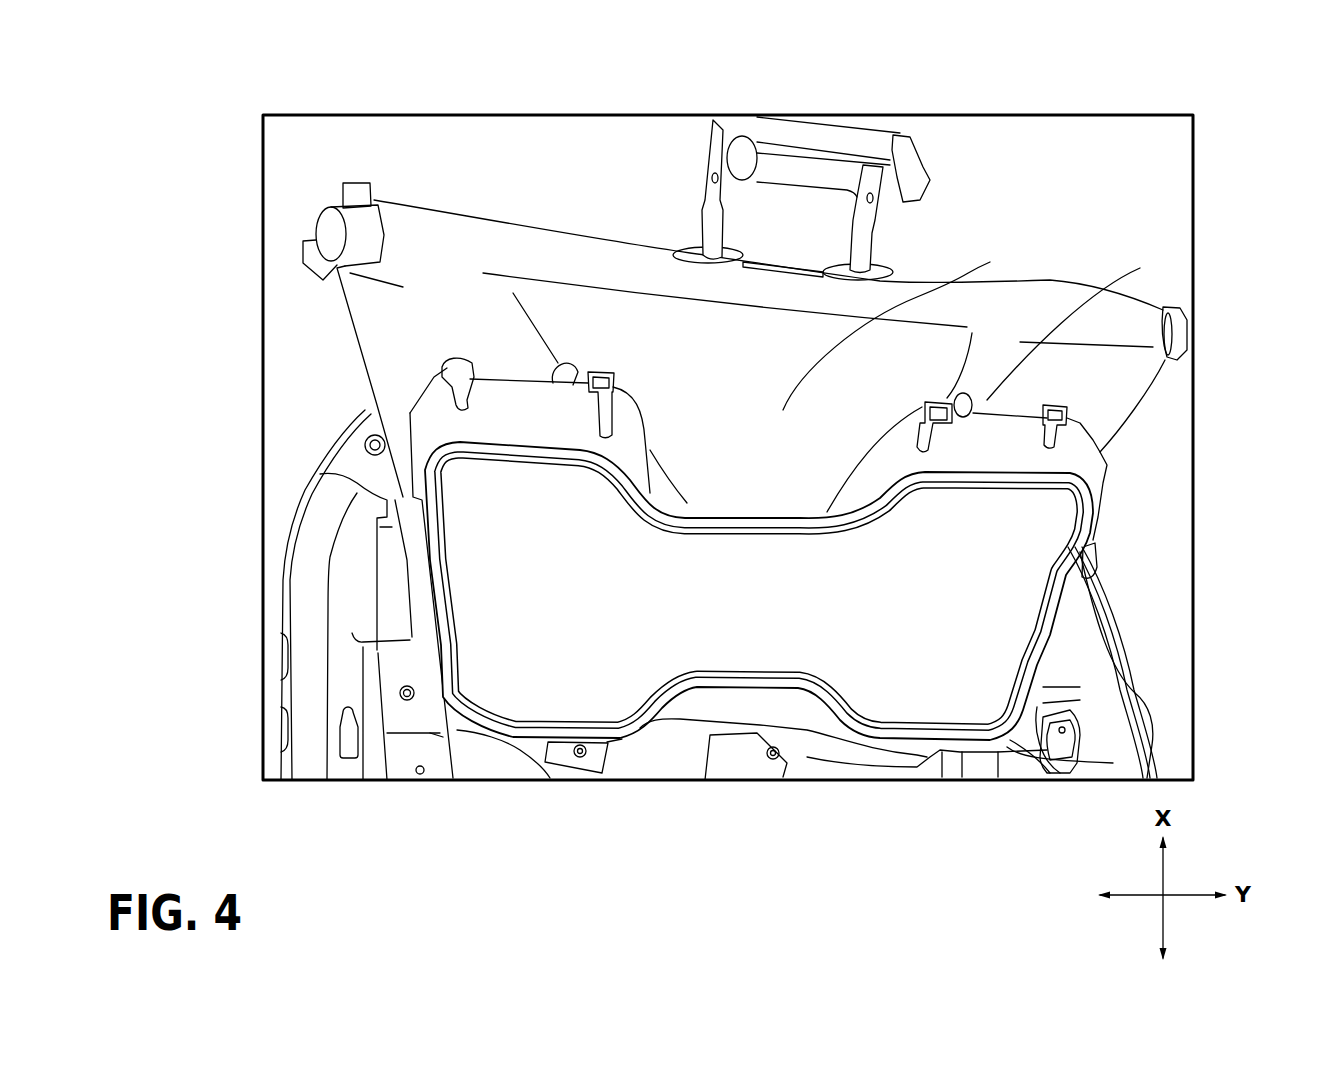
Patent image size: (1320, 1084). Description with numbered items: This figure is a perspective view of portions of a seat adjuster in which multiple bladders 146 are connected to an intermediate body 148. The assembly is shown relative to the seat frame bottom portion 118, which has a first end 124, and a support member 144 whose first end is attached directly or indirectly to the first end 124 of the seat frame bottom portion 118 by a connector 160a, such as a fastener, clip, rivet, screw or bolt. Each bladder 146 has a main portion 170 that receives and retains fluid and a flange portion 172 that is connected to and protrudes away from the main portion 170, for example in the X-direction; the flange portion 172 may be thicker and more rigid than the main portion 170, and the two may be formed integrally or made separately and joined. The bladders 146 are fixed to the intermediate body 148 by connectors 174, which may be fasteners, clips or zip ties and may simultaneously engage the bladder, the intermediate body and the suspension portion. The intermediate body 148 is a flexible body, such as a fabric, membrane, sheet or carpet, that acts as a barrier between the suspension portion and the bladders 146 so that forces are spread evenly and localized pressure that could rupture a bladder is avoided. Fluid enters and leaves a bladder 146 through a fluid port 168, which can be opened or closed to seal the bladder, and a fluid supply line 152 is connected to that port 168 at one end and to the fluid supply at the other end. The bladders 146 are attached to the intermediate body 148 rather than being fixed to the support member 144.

The seat frame bottom portion 118 is at (328, 458).
The first end 124 is at (328, 433).
The support member 144 is at (537, 748).
The bladder 146 is at (1106, 493).
The intermediate body 148 is at (955, 278).
The fluid supply line 152 is at (1112, 664).
The connector 160a is at (582, 748).
The fluid port 168 is at (1078, 543).
The main portion 170 is at (1000, 550).
The flange portion 172 is at (491, 402).
The connector 174 is at (605, 368).